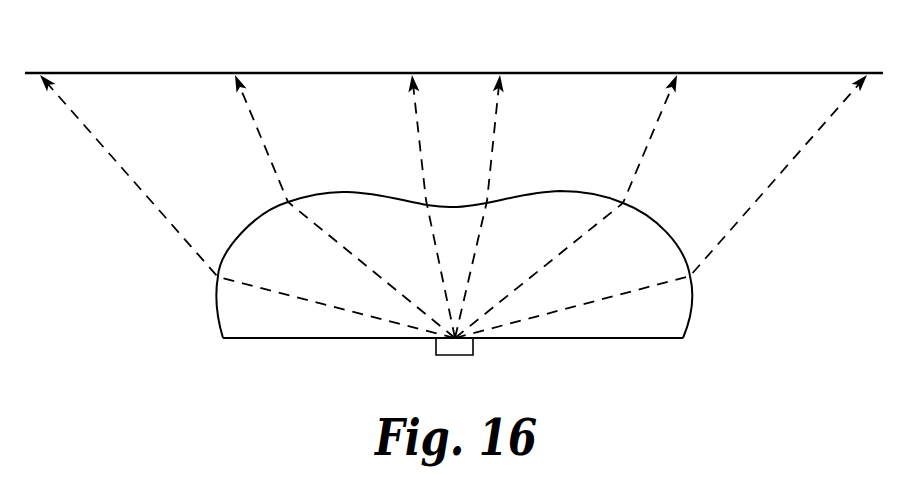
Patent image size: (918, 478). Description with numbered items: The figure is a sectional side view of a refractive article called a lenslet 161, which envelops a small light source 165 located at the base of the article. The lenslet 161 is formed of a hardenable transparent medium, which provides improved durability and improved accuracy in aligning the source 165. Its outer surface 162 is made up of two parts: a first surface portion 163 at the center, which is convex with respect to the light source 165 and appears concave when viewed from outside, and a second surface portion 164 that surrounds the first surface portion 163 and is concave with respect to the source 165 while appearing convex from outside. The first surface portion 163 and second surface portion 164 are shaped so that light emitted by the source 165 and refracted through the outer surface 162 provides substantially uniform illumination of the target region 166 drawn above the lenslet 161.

The lenslet 161 is at (680, 173).
The outer surface 162 is at (339, 191).
The first surface portion 163 is at (546, 190).
The second surface portion 164 is at (692, 300).
The light source 165 is at (455, 355).
The target region 166 is at (728, 72).